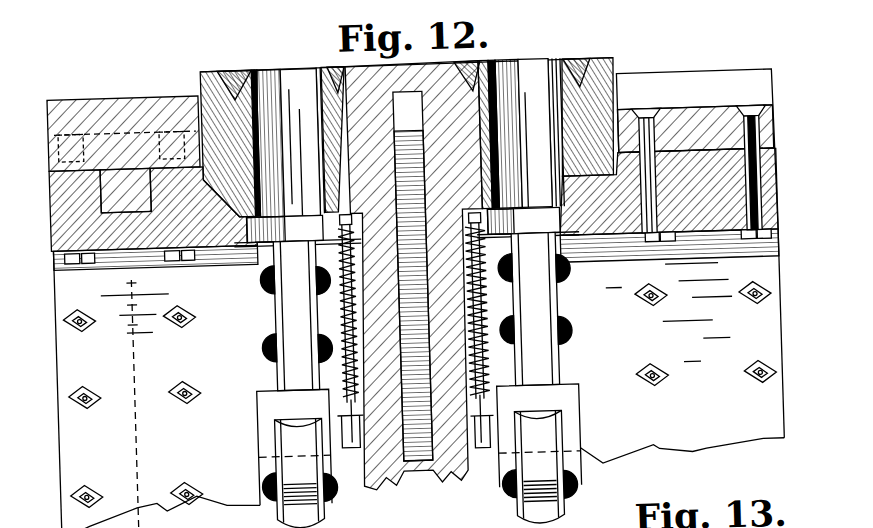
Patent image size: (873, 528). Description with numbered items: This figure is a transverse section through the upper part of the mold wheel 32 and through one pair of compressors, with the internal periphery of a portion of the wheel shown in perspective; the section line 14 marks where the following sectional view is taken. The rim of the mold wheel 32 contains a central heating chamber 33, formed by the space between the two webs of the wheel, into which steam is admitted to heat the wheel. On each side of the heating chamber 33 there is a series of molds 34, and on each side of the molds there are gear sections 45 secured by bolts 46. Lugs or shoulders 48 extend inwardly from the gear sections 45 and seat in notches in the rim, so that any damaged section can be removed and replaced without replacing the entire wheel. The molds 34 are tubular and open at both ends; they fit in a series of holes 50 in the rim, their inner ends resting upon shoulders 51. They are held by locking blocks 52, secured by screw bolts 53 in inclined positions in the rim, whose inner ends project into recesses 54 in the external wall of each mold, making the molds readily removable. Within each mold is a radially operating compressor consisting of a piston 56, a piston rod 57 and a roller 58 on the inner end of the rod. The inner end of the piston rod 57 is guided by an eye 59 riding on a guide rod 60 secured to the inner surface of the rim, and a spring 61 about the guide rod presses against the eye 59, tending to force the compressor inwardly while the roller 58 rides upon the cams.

The section line 14 is at (162, 78).
The mold wheel 32 is at (56, 204).
The central heating chamber 33 is at (418, 485).
The molds 34 is at (300, 176).
The gear sections 45 is at (60, 84).
The bolts 46 is at (766, 150).
The lugs or shoulders 48 is at (407, 182).
The holes 50 is at (262, 273).
The shoulders 51 is at (240, 244).
The locking blocks 52 is at (216, 65).
The screw bolts 53 is at (232, 68).
The recesses 54 is at (261, 66).
The piston 56 is at (296, 211).
The piston rods 57 is at (416, 312).
The rollers 58 is at (281, 453).
The eye 59 is at (477, 481).
The guide rod 60 is at (348, 370).
The spring 61 is at (345, 300).